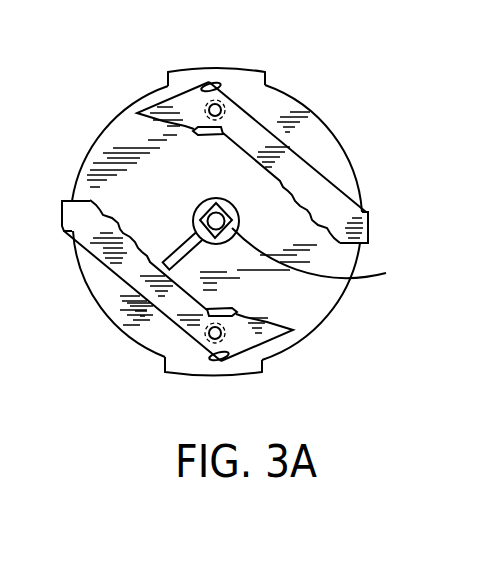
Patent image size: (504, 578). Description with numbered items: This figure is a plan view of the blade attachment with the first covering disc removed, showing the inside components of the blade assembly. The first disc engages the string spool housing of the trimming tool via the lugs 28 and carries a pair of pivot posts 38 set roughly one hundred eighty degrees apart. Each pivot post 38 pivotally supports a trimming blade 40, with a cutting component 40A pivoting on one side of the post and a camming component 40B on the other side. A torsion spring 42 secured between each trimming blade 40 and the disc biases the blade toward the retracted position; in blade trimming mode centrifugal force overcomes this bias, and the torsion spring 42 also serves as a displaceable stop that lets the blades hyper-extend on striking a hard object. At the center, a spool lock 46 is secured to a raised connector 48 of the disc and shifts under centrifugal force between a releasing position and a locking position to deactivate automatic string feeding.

The lugs 28 is at (227, 297).
The pivot posts 38 is at (222, 109).
The trimming blades 40 is at (291, 170).
The cutting component 40A is at (367, 214).
The camming component 40B is at (163, 110).
The torsion spring 42 is at (232, 90).
The spool lock 46 is at (185, 245).
The raised connector 48 is at (321, 257).